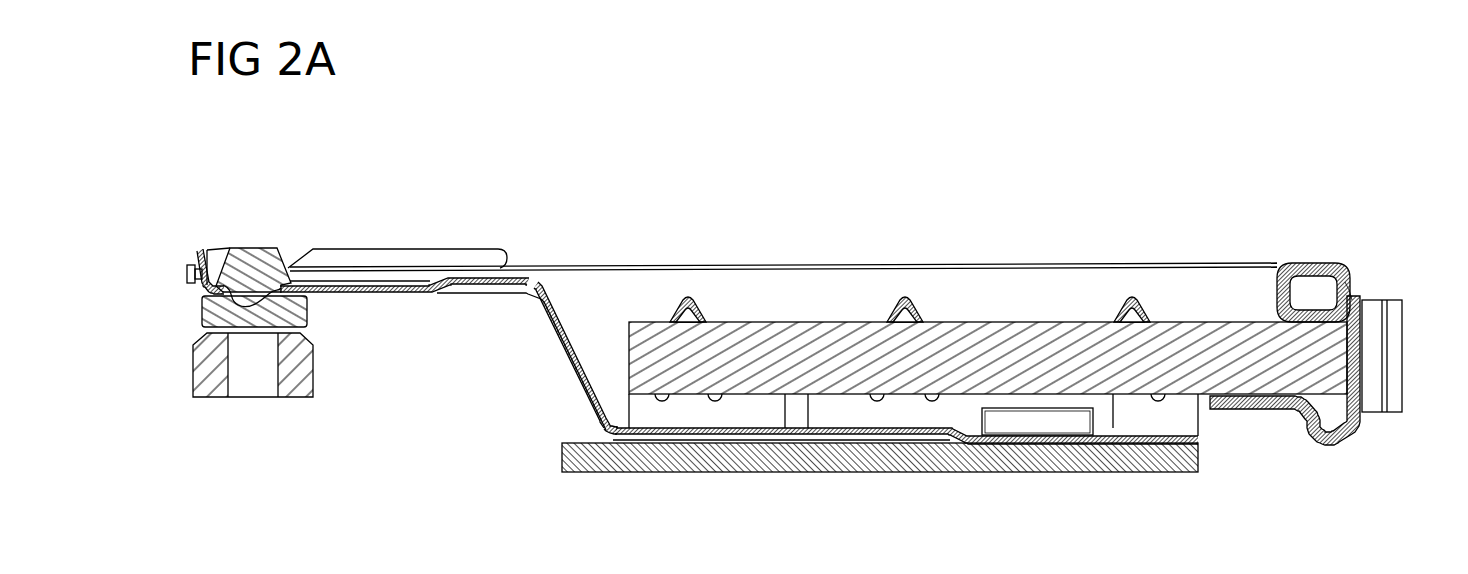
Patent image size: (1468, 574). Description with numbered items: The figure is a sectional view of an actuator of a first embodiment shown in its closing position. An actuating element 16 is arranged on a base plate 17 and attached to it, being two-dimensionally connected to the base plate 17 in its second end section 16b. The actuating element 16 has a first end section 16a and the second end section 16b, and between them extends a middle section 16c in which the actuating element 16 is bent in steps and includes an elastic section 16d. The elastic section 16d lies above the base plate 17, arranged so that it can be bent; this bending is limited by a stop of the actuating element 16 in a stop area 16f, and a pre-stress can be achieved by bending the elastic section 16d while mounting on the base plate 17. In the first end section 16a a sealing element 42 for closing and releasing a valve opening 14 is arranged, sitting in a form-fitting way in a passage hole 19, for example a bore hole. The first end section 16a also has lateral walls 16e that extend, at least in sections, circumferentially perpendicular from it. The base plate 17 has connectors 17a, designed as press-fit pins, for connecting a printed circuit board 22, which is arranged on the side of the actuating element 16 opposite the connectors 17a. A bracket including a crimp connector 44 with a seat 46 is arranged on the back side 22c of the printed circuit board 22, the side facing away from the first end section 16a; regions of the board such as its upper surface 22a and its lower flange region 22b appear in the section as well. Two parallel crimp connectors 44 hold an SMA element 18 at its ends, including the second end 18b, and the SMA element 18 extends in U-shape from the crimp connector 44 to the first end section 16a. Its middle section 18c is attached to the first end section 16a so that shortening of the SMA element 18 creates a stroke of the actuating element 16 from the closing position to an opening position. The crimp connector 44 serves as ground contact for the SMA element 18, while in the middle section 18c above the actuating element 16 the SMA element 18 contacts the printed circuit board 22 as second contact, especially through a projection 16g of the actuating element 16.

The valve opening 14 is at (259, 365).
The actuating element 16 is at (639, 341).
The first end section 16a is at (373, 234).
The second end section 16b is at (1045, 441).
The middle section 16c is at (547, 327).
The elastic section 16d is at (771, 431).
The lateral walls 16e is at (476, 249).
The stop area 16f is at (604, 435).
The projection 16g is at (197, 252).
The base plate 17 is at (923, 458).
The connectors 17a is at (1133, 297).
The SMA element 18 is at (834, 245).
The second end 18b is at (1318, 262).
The middle section 18c is at (187, 274).
The passage hole 19 is at (247, 313).
The printed circuit board 22 is at (995, 367).
The top surface of housing 22a is at (1240, 322).
The bottom flange of housing 22b is at (1200, 395).
The back side 22c is at (1347, 372).
The sealing element 42 is at (255, 274).
The crimp connector 44 is at (1347, 280).
The seat 46 is at (1373, 298).